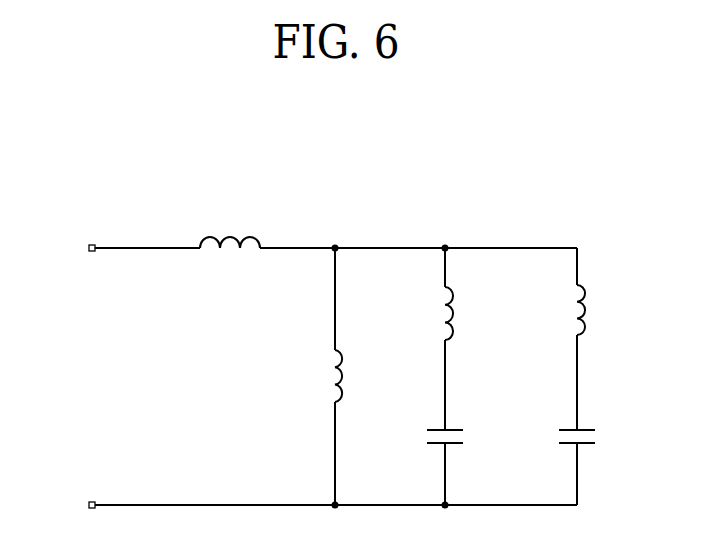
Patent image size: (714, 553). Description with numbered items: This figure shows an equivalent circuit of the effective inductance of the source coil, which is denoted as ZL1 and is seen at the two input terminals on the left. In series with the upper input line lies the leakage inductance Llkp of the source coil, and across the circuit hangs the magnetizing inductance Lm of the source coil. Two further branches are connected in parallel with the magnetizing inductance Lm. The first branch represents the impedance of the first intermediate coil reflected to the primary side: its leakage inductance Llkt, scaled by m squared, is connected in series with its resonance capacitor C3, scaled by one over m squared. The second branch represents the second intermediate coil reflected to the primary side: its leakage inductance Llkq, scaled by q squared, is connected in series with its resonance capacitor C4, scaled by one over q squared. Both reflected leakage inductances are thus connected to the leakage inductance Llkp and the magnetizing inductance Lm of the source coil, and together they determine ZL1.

The leakage inductance of the source coil Llkp is at (230, 227).
The magnetizing inductance of the source coil Lm is at (321, 376).
The leakage inductance of the first intermediate coil Llkt is at (476, 313).
The leakage inductance of the second intermediate coil Llkq is at (608, 310).
The resonance capacitor of the first intermediate coil C3 is at (472, 439).
The resonance capacitor of the second intermediate coil C4 is at (604, 439).
The effective inductance of the source coil ZL1 is at (80, 371).